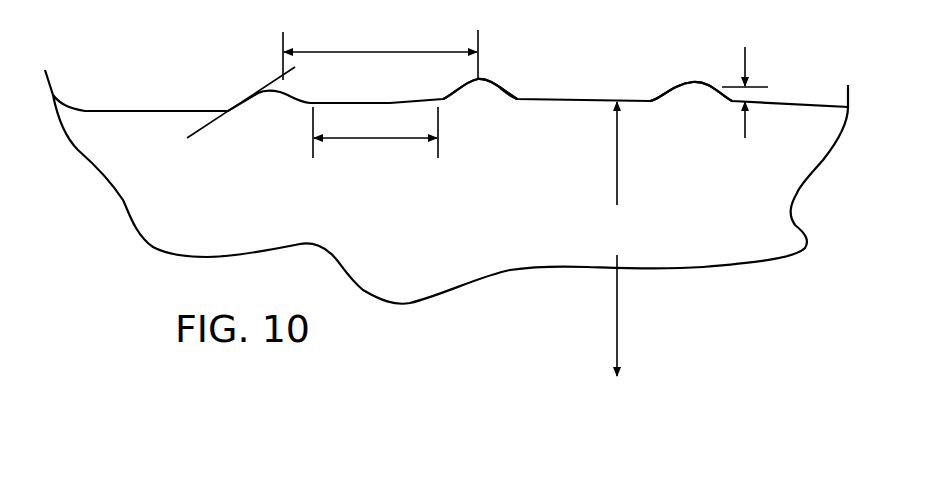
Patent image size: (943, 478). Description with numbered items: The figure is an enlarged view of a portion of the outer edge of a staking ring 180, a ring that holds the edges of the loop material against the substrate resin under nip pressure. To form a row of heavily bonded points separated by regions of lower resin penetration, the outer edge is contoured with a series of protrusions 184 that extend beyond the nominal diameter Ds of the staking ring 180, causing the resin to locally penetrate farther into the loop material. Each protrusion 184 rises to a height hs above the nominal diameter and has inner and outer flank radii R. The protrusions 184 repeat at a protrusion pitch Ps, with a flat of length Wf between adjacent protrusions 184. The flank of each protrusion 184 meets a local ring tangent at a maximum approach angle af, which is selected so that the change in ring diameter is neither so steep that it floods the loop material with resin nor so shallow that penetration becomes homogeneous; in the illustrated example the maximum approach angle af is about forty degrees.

The staking ring 180 is at (457, 259).
The protrusion 184 is at (488, 82).
The inner and outer radii R is at (516, 91).
The protrusion pitch Ps is at (380, 46).
The length of the flat between protrusions Wf is at (375, 141).
The height of each protrusion hs is at (745, 80).
The nominal diameter of the staking ring Ds is at (613, 239).
The maximum approach angle af is at (220, 162).